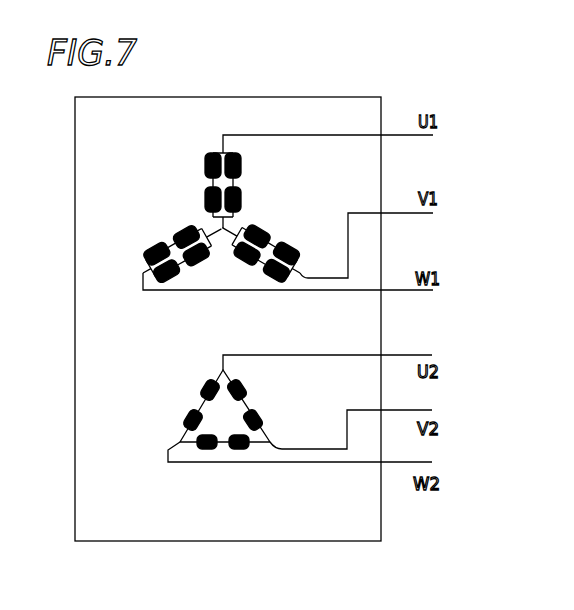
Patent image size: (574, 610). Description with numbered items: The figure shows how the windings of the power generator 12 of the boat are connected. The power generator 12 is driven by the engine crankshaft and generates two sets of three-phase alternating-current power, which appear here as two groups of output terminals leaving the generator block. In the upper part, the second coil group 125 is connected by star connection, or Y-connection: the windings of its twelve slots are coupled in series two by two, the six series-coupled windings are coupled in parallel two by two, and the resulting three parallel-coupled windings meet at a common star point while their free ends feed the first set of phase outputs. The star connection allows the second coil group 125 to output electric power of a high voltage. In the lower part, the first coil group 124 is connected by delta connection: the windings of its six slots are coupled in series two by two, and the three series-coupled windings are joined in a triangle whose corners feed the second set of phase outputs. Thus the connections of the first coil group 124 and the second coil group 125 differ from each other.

The power generator 12 is at (330, 97).
The first coil group 124 is at (166, 402).
The second coil group 125 is at (166, 205).